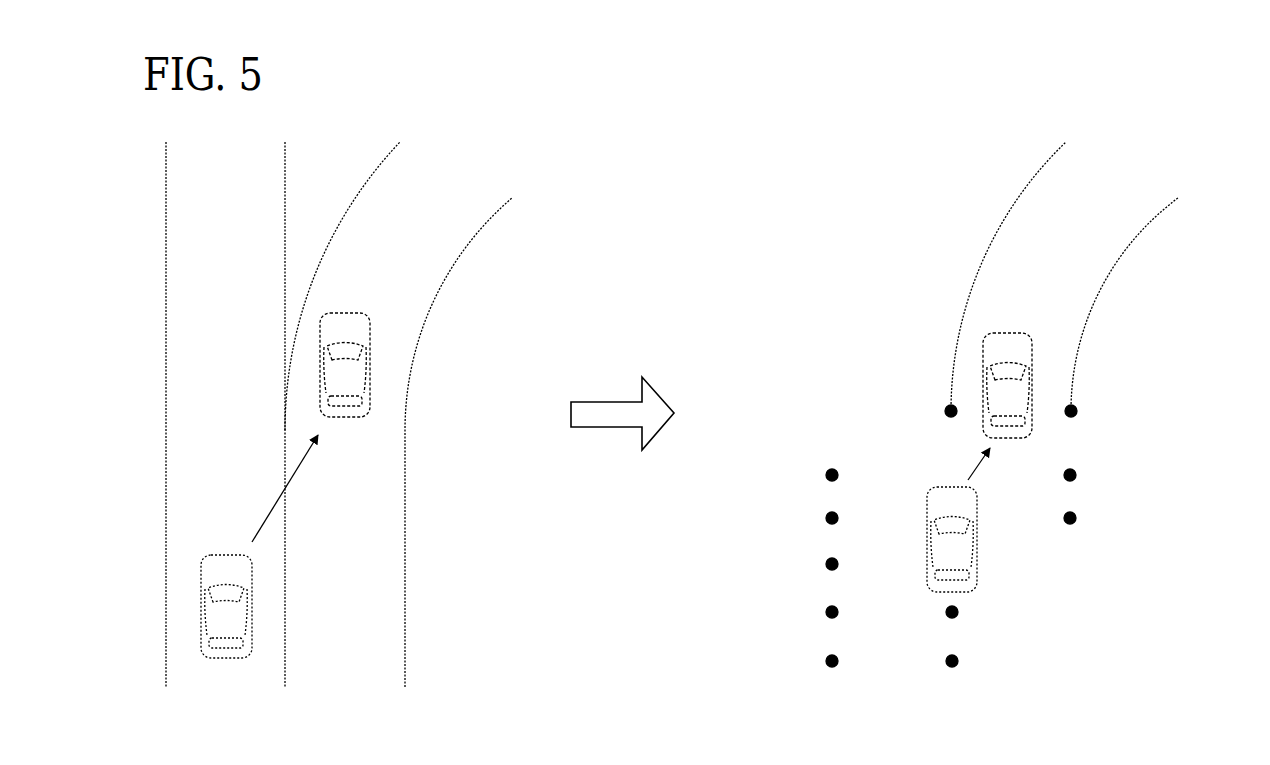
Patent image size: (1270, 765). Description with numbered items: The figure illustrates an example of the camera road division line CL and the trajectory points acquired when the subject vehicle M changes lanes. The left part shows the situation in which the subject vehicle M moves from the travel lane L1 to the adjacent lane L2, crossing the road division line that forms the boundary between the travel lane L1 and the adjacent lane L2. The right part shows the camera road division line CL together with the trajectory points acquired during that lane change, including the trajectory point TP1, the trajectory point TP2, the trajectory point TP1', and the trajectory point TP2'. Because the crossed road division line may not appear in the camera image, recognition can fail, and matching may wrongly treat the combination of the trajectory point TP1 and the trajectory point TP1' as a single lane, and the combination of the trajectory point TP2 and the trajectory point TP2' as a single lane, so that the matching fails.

The travel lane L1 is at (240, 193).
The adjacent lane L2 is at (460, 193).
The subject vehicle M is at (221, 550).
The camera road division line CL is at (1125, 261).
The trajectory point TP1 is at (788, 476).
The trajectory point TP2 is at (788, 519).
The trajectory point TP1' is at (1117, 476).
The trajectory point TP2' is at (1117, 519).